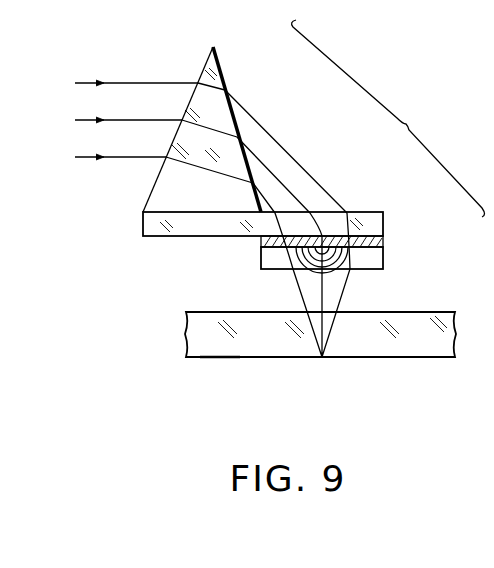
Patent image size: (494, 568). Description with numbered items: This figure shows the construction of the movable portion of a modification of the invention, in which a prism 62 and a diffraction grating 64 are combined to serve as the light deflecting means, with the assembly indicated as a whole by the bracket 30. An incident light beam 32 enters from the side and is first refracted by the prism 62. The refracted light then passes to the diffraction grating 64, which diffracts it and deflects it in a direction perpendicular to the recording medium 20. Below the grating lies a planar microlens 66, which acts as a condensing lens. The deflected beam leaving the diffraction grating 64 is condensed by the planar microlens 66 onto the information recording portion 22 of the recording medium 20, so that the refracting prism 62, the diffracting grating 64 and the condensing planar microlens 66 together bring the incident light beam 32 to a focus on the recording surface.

The recording medium 20 is at (440, 320).
The information recording portion 22 is at (228, 358).
The optical head 30 is at (388, 118).
The incident light beam 32 is at (133, 83).
The prism 62 is at (224, 70).
The diffraction grating 64 is at (350, 238).
The planar microlens 66 is at (384, 258).